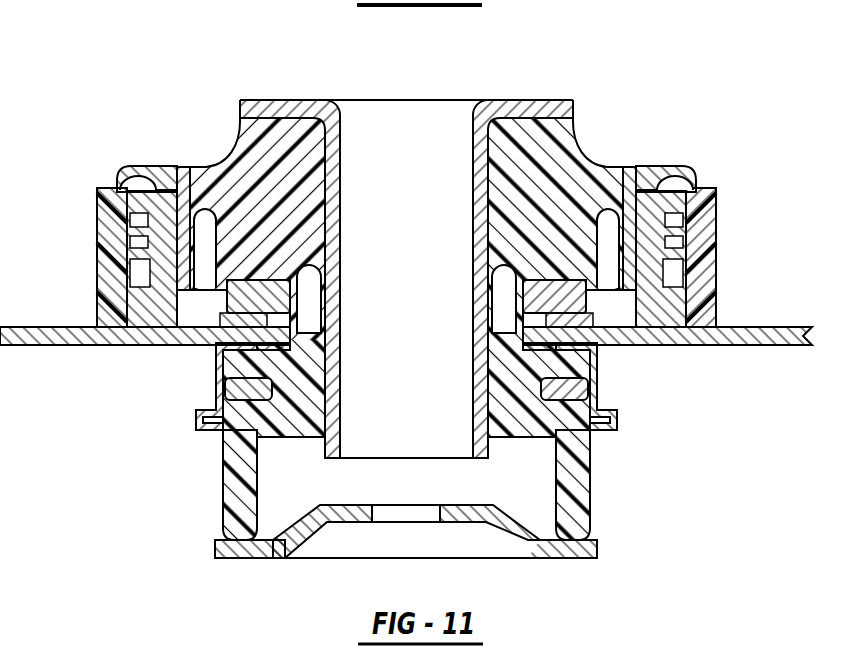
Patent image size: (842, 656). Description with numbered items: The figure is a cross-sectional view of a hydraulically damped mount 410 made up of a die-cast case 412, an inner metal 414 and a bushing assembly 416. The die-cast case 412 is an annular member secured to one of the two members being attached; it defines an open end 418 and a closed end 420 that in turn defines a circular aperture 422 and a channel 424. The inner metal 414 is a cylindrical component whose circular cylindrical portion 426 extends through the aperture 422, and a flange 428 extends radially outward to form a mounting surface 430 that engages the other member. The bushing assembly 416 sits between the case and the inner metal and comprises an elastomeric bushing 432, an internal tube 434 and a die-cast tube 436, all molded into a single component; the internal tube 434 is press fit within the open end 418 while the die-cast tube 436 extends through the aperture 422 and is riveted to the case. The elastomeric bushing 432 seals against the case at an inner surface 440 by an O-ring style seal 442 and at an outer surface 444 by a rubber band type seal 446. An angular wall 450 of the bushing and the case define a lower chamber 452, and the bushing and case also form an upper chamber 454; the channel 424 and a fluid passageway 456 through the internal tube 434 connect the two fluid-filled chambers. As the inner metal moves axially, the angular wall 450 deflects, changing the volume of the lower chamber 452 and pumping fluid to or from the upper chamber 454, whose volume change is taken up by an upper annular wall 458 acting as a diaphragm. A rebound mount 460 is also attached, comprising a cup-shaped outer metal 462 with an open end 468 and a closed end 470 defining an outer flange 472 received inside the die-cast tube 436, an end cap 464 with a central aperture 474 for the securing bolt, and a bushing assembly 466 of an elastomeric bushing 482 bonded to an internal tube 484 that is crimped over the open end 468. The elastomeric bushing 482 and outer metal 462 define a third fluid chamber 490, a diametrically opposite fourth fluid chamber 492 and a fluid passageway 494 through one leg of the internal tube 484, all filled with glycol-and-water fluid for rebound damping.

The hydraulically damped mount 410 is at (735, 55).
The die-cast case 412 is at (623, 353).
The inner metal 414 is at (405, 127).
The bushing assembly 416 is at (228, 140).
The open end 418 is at (657, 168).
The closed end 420 is at (667, 350).
The circular aperture 422 is at (290, 308).
The channel 424 is at (97, 220).
The circular cylindrical portion 426 is at (333, 373).
The flange 428 is at (580, 108).
The mounting surface 430 is at (530, 100).
The elastomeric bushing 432 is at (325, 185).
The internal tube 434 is at (700, 212).
The die-cast tube 436 is at (213, 300).
The inner surface 440 is at (680, 320).
The O-ring style seal 442 is at (165, 290).
The outer surface 444 is at (570, 320).
The rubber band type seal 446 is at (133, 300).
The angular wall 450 is at (212, 237).
The lower chamber 452 is at (640, 215).
The upper chamber 454 is at (672, 165).
The fluid passageway 456 is at (142, 335).
The upper annular wall 458 is at (140, 166).
The rebound mount 460 is at (284, 577).
The outer metal 462 is at (240, 300).
The end cap 464 is at (578, 550).
The bushing assembly 466 is at (199, 531).
The open end 468 is at (553, 438).
The closed end 470 is at (282, 352).
The outer flange 472 is at (497, 327).
The central aperture 474 is at (373, 512).
The elastomeric bushing 482 is at (593, 497).
The internal tube 484 is at (222, 395).
The third fluid chamber 490 is at (580, 390).
The fourth fluid chamber 492 is at (262, 392).
The fluid passageway 494 is at (597, 393).